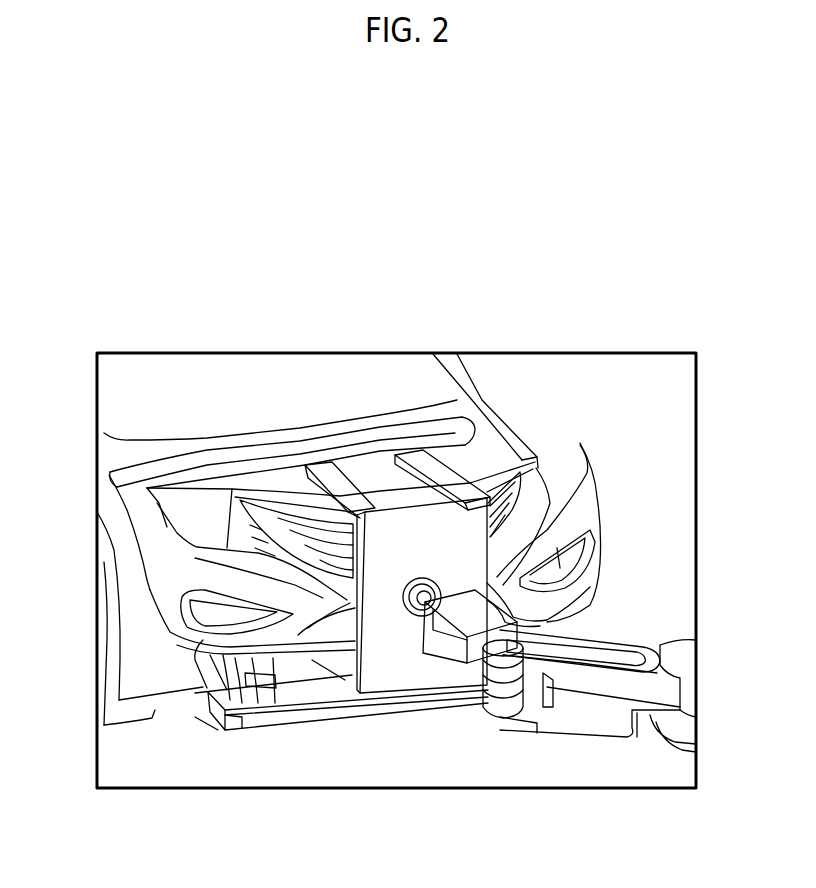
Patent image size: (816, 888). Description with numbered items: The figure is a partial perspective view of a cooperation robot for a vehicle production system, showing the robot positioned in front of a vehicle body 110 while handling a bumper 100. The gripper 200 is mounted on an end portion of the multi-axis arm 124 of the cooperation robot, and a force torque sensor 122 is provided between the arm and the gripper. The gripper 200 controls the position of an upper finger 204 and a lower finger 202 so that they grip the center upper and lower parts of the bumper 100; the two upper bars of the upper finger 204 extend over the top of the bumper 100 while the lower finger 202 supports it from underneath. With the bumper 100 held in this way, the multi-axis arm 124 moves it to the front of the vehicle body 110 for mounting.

The bumper 100 is at (177, 640).
The vehicle body 110 is at (123, 603).
The force torque (FT) sensor 122 is at (418, 616).
The multi-axis arm 124 is at (571, 740).
The gripper 200 is at (435, 673).
The lower finger 202 is at (336, 697).
The upper finger 204 is at (412, 460).